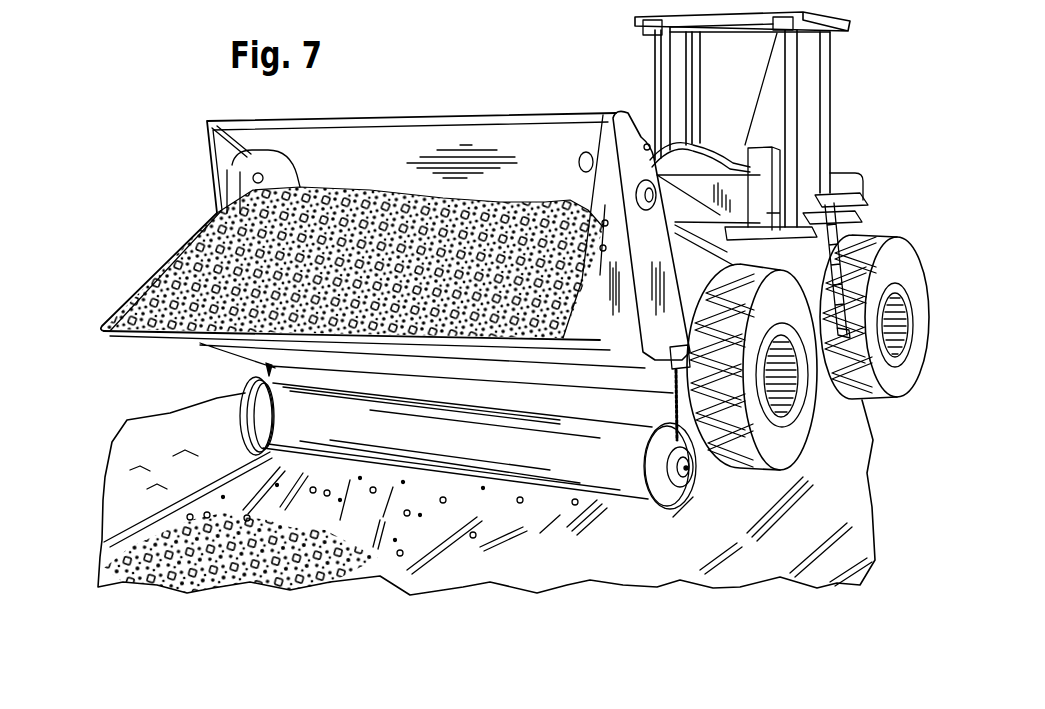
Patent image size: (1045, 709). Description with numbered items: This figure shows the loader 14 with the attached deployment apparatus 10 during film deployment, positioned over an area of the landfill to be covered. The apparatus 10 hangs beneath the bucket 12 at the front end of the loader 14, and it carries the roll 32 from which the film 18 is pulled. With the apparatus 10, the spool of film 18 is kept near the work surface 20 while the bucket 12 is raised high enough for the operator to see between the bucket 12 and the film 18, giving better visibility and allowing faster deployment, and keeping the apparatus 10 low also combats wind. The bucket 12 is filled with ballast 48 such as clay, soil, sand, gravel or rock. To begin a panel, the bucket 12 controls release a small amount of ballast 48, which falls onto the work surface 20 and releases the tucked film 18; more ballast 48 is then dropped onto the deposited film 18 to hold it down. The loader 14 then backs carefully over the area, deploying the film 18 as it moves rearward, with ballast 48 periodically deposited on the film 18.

The film deployment apparatus 10 is at (771, 264).
The bucket 12 is at (565, 113).
The loader 14 is at (832, 138).
The film 18 is at (453, 567).
The work surface 20 is at (112, 441).
The roll 32 is at (606, 493).
The ballast 48 is at (248, 155).